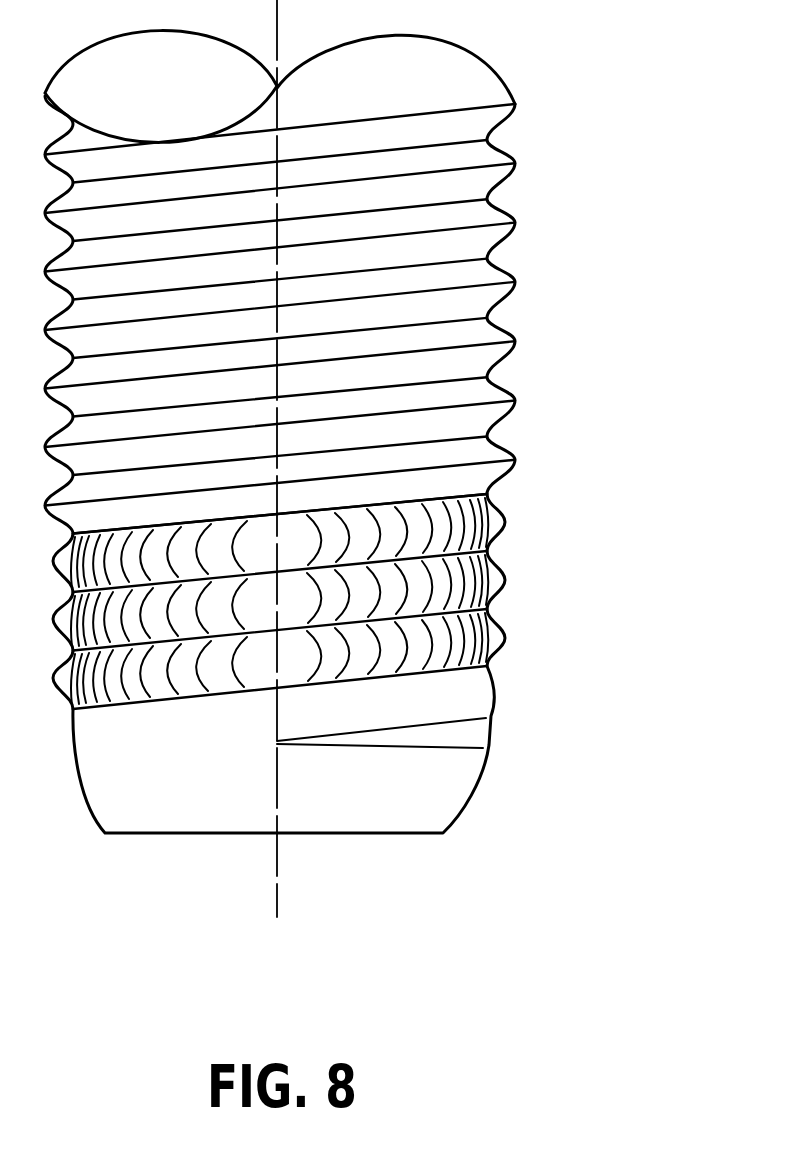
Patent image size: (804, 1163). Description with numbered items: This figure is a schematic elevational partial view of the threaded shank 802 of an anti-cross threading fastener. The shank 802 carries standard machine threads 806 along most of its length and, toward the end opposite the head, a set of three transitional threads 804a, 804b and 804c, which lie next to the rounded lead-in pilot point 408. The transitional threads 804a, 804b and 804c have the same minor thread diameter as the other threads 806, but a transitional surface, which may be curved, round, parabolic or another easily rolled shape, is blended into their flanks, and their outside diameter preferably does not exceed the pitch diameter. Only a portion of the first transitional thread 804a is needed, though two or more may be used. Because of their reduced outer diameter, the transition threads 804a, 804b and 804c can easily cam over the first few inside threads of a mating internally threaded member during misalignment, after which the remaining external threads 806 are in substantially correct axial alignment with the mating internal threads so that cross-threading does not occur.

The threaded shank 802 is at (455, 78).
The threads 806 is at (513, 227).
The transitional thread 804c is at (508, 522).
The transitional thread 804b is at (508, 578).
The transitional thread 804a is at (508, 635).
The rounded lead-in pilot point 408 is at (210, 797).